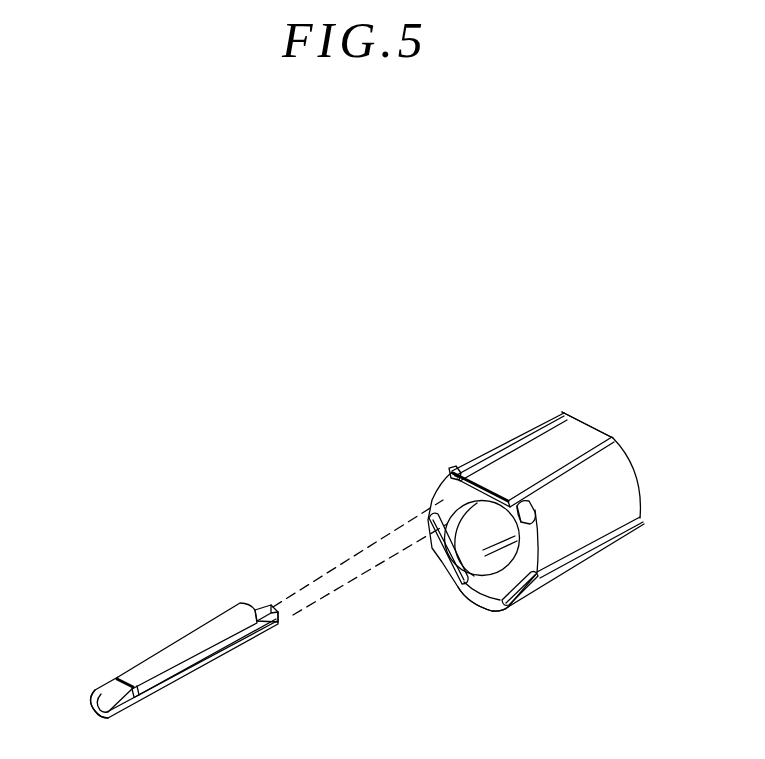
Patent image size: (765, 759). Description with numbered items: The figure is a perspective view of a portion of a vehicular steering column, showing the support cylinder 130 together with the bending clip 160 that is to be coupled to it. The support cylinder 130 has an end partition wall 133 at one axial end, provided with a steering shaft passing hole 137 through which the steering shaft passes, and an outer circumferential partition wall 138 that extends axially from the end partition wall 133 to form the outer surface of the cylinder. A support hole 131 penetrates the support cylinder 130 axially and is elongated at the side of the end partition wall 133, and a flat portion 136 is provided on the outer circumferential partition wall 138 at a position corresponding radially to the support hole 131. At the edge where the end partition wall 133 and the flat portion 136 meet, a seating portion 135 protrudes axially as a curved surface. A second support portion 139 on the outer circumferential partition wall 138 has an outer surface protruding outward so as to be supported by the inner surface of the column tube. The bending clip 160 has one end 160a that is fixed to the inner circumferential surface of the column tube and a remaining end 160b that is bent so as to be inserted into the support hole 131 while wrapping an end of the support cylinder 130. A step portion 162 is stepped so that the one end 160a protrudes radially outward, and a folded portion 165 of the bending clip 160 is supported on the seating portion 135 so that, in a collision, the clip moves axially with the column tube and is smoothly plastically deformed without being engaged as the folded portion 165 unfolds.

The support cylinder 130 is at (485, 414).
The support hole 131 is at (448, 490).
The end partition wall 133 is at (490, 592).
The seating portion 135 is at (522, 590).
The flat portion 136 is at (528, 452).
The steering shaft passing hole 137 is at (495, 573).
The outer circumferential partition wall 138 is at (615, 490).
The second support portion 139 is at (537, 508).
The bending clip 160 is at (148, 617).
The one end 160a is at (225, 627).
The remaining end 160b is at (265, 606).
The step portion 162 is at (120, 681).
The folded portion 165 is at (100, 701).